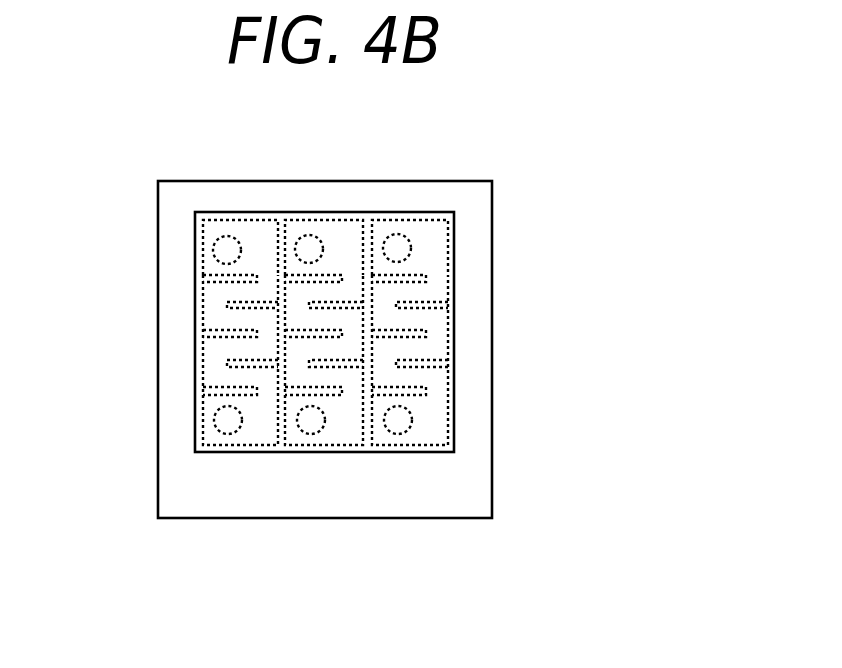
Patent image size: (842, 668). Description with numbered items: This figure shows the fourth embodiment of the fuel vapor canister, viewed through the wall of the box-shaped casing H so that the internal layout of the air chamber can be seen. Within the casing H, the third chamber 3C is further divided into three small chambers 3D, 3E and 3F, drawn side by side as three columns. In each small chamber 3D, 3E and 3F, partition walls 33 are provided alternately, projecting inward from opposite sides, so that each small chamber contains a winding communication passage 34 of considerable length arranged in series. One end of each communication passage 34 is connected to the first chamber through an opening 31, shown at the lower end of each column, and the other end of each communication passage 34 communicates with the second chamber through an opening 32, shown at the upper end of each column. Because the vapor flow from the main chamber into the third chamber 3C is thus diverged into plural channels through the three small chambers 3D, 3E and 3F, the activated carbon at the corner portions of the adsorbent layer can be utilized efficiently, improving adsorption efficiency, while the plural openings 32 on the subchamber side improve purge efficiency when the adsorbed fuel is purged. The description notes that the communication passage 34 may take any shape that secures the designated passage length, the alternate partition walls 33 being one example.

The casing H is at (497, 433).
The third chamber 3C is at (203, 472).
The small chamber 3D is at (258, 425).
The small chamber 3E is at (347, 422).
The small chamber 3F is at (433, 423).
The opening 31 is at (229, 437).
The opening 32 is at (203, 231).
The partition wall 33 is at (422, 273).
The communication passage 34 is at (258, 238).